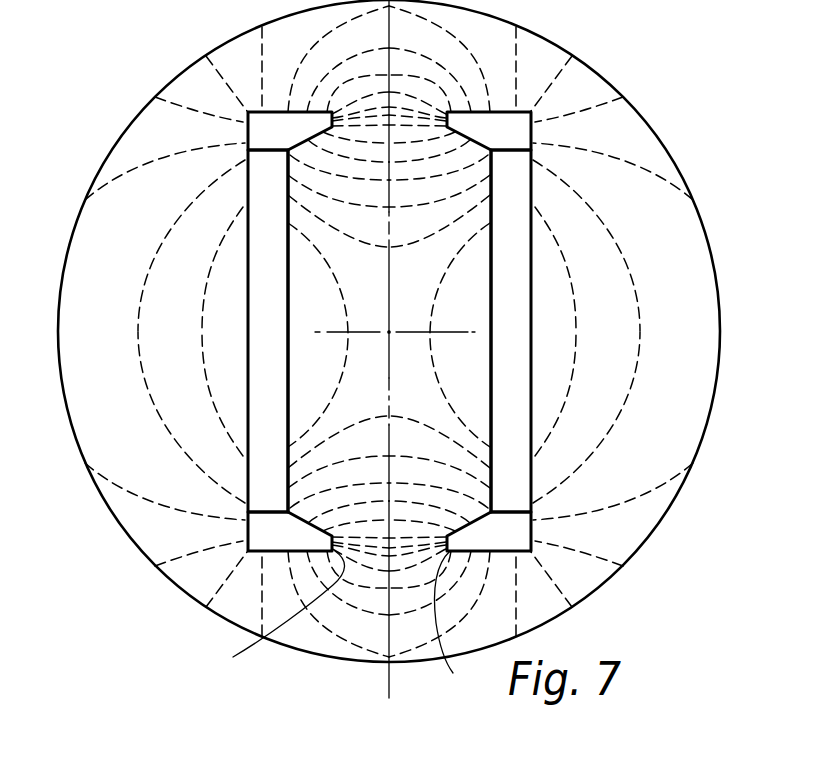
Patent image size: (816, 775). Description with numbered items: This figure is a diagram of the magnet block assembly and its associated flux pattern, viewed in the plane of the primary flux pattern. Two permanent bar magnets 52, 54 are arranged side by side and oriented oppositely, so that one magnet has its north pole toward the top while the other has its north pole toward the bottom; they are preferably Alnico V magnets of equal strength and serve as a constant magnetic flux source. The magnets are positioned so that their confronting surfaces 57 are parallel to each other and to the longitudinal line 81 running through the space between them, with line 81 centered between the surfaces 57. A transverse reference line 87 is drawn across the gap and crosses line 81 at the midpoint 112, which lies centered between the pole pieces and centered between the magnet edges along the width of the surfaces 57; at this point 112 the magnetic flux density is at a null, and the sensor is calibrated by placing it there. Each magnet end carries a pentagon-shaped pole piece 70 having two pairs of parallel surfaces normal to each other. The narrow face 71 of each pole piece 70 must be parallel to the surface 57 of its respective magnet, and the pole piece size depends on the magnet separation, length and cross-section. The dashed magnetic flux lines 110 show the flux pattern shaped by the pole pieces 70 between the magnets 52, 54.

The permanent bar magnet 52 is at (531, 405).
The permanent bar magnet 54 is at (262, 405).
The confronting surface 57 is at (288, 303).
The pole piece 70 is at (280, 110).
The narrow face 71 is at (345, 625).
The longitudinal line 81 is at (389, 680).
The transverse axis 87 is at (366, 335).
The magnetic flux lines 110 is at (462, 30).
The midpoint 112 is at (389, 332).